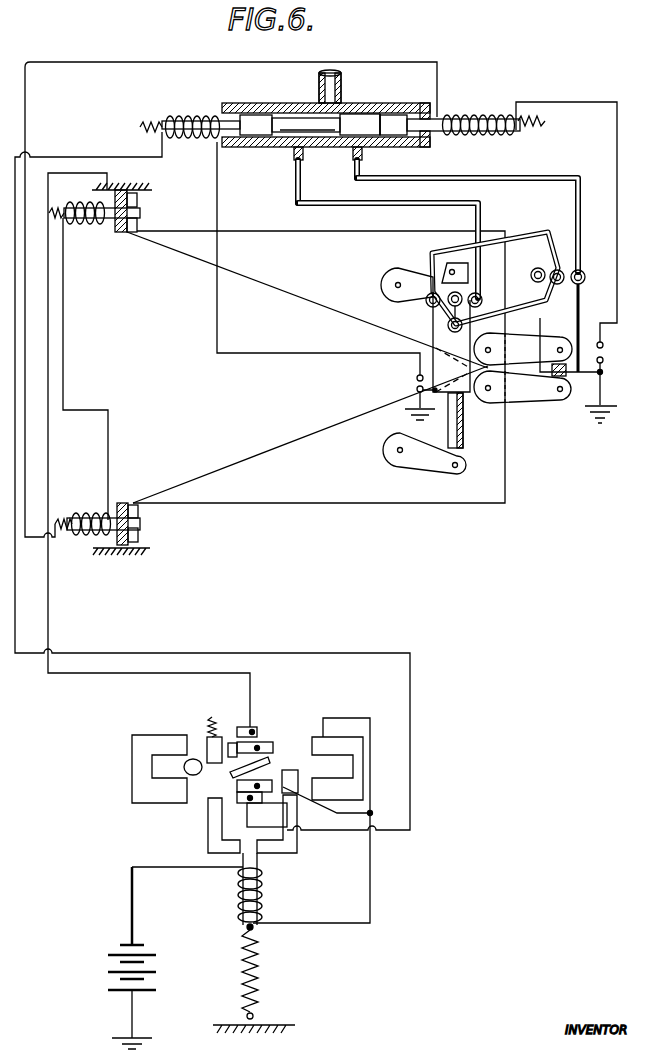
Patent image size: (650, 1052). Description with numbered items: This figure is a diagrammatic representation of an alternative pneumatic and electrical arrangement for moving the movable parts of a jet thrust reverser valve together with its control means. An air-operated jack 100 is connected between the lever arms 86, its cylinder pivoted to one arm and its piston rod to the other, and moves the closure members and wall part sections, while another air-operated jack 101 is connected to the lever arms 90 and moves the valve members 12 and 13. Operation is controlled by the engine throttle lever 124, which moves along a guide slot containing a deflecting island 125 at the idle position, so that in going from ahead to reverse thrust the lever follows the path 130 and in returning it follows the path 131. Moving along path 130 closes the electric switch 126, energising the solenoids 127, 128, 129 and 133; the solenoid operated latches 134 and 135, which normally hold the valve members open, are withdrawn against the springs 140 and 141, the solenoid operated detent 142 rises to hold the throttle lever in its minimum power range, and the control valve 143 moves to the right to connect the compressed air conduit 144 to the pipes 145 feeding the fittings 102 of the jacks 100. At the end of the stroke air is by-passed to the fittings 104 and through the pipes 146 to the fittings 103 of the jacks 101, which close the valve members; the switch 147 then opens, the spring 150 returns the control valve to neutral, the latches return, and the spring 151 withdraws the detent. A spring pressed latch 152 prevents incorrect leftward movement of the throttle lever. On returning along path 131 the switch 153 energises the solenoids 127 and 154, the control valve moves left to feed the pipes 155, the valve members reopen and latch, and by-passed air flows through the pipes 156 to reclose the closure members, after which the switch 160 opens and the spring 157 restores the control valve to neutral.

The valve member 12 is at (315, 290).
The valve member 13 is at (303, 450).
The lever arm 86 is at (388, 278).
The lever arm 90 is at (528, 362).
The air-operated jack 100 is at (446, 328).
The air-operated jack 101 is at (580, 302).
The fitting 102 is at (482, 303).
The fitting 103 is at (390, 293).
The fitting 104 is at (440, 265).
The throttle lever 124 is at (186, 762).
The deflecting island 125 is at (265, 748).
The electric switch 126 is at (258, 732).
The solenoid 127 is at (262, 882).
The solenoid 128 is at (82, 225).
The solenoid 129 is at (92, 512).
The path 130 is at (238, 765).
The path 131 is at (272, 770).
The solenoid 133 is at (490, 110).
The solenoid operated latch 134 is at (128, 212).
The solenoid operated latch 135 is at (140, 528).
The spring 140 is at (58, 209).
The spring 141 is at (70, 547).
The solenoid operated detent 142 is at (207, 842).
The control valve 143 is at (410, 100).
The conduit 144 is at (342, 84).
The pipe 145 is at (303, 172).
The pipe 146 is at (528, 332).
The switch 147 is at (603, 352).
The spring 150 is at (545, 117).
The spring 151 is at (262, 961).
The spring pressed latch 152 is at (207, 748).
The electric switch 153 is at (247, 790).
The solenoid 154 is at (178, 120).
The pipe 155 is at (460, 178).
The pipe 156 is at (528, 240).
The spring 157 is at (147, 123).
The switch 160 is at (415, 383).